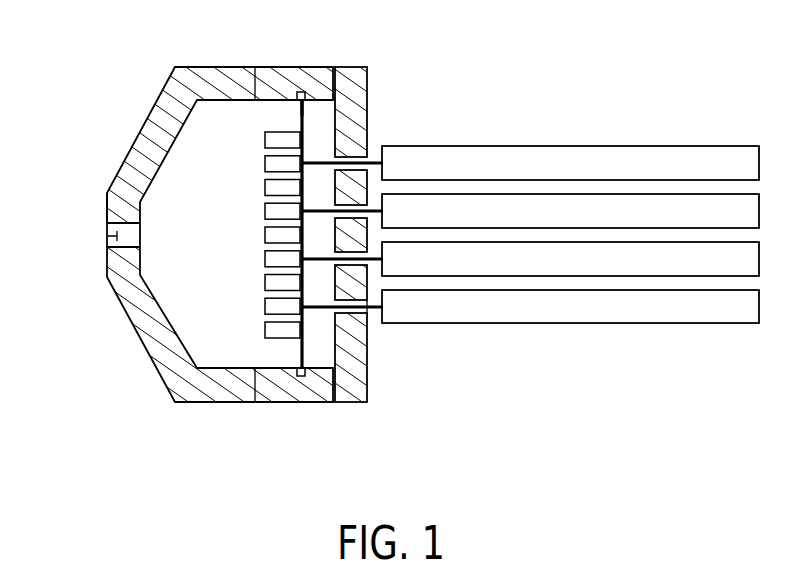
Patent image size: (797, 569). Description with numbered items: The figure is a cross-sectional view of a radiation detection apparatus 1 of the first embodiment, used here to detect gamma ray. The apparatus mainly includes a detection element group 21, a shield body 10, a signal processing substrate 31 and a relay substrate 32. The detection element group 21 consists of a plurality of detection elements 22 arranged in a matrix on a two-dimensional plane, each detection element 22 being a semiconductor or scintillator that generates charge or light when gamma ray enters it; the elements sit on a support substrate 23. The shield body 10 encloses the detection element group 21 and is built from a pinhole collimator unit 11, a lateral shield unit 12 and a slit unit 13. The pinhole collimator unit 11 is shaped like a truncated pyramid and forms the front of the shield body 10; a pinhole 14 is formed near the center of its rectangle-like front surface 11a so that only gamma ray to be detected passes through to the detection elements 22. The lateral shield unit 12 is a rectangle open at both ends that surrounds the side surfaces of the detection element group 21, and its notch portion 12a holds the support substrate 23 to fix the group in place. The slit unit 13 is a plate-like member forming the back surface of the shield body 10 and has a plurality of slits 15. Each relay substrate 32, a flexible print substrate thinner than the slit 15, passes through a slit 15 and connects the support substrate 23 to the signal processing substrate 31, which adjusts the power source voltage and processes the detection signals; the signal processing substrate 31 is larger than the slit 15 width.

The radiation detection apparatus 1 is at (394, 283).
The shield body 10 is at (197, 402).
The pinhole collimator unit 11 is at (135, 327).
The front surface 11a is at (107, 205).
The lateral shield unit 12 is at (276, 132).
The notch portion 12a is at (304, 91).
The slit unit 13 is at (348, 403).
The pinhole 14 is at (117, 238).
The slit 15 is at (372, 314).
The detection element group 21 is at (300, 99).
The detection element 22 is at (282, 339).
The support substrate 23 is at (303, 115).
The signal processing substrate 31 is at (479, 145).
The relay substrate 32 is at (375, 161).